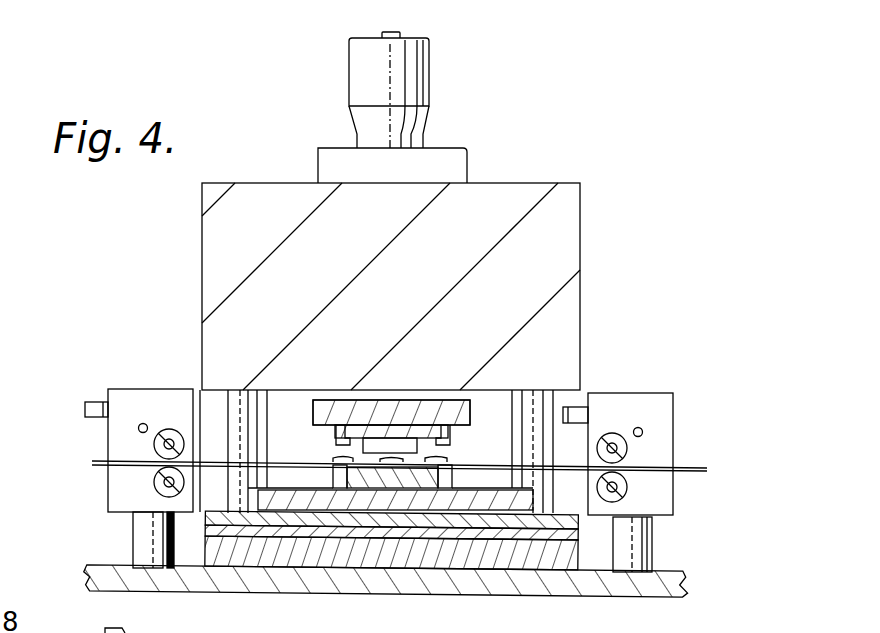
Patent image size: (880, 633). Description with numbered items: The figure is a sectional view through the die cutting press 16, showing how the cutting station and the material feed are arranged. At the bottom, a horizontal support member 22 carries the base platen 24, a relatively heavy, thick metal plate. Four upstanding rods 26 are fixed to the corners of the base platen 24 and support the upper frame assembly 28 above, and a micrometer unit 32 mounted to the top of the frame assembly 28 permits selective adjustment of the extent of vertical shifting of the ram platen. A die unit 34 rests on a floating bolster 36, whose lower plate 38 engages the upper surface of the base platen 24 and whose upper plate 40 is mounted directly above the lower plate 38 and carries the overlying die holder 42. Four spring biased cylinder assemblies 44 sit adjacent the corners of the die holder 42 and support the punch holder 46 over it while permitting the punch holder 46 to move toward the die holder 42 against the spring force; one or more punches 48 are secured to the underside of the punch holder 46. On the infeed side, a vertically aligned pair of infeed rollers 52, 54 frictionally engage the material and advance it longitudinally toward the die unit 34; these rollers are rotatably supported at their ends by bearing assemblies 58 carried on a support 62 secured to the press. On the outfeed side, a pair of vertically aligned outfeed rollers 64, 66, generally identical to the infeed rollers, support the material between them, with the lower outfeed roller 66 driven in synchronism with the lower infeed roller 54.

The die cutting press 16 is at (590, 170).
The horizontal support member 22 is at (667, 573).
The base platen 24 is at (567, 557).
The upstanding rods 26 is at (243, 400).
The upper frame assembly 28 is at (563, 267).
The micrometer unit 32 is at (445, 82).
The die unit 34 is at (438, 388).
The floating bolster 36 is at (197, 533).
The lower plate 38 is at (485, 540).
The upper plate 40 is at (423, 523).
The die holder 42 is at (365, 510).
The spring biased cylinder assemblies 44 is at (338, 435).
The punch holder 46 is at (340, 410).
The punches 48 is at (387, 445).
The upper infeed roller 52 is at (160, 430).
The lower infeed roller 54 is at (158, 483).
The bearing assemblies 58 is at (123, 400).
The support 62 is at (140, 527).
The upper outfeed roller 64 is at (625, 452).
The lower outfeed roller 66 is at (625, 490).